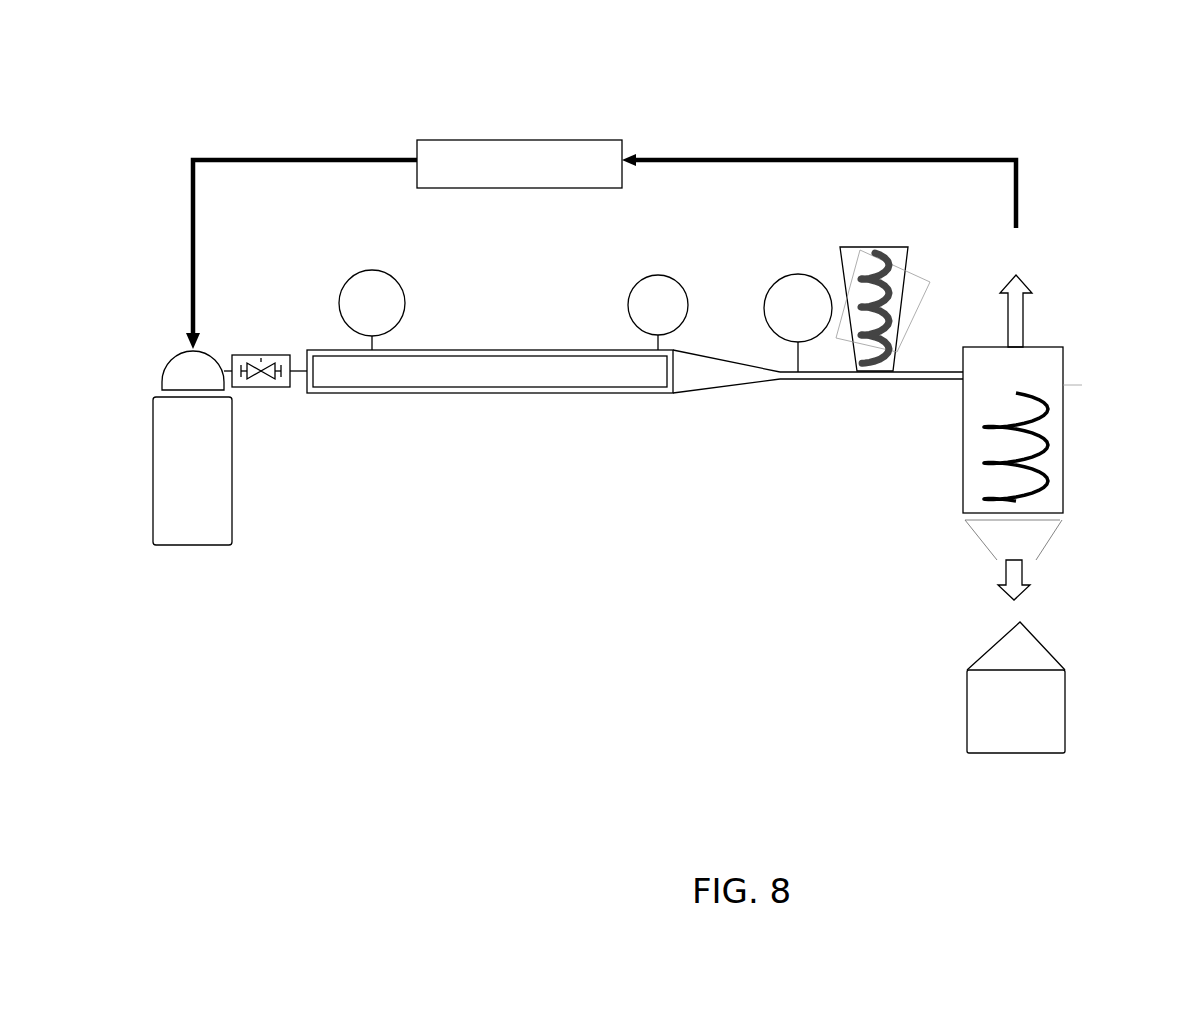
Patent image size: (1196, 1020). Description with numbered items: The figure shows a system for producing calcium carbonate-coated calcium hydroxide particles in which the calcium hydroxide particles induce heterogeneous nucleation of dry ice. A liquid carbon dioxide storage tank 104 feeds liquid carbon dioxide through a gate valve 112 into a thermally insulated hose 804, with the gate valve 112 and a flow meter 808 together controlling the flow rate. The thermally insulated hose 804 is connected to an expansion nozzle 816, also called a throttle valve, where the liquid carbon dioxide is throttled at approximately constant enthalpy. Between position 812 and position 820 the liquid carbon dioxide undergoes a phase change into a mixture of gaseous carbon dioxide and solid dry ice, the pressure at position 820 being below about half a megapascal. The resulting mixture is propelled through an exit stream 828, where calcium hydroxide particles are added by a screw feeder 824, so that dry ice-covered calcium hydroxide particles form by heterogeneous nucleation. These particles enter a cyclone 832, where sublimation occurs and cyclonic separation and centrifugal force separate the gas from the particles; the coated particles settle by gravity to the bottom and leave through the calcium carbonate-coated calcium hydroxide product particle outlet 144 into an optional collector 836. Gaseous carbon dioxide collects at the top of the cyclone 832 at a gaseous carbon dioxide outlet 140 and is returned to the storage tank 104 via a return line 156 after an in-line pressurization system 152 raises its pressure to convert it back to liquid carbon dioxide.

The liquid CO2 storage tank 104 is at (209, 548).
The gate valve 112 is at (272, 397).
The gaseous CO2 outlet 140 is at (1029, 336).
The calcium carbonate-coated calcium hydroxide product particle outlet 144 is at (1036, 590).
The in-line pressurization system 152 is at (582, 137).
The return line 156 is at (265, 155).
The thermally insulated hose 804 is at (425, 395).
The flow meter 808 is at (364, 276).
The position 812 is at (646, 286).
The expansion nozzle 816 is at (704, 394).
The position 820 is at (779, 283).
The screw feeder 824 is at (877, 246).
The exit stream 828 is at (831, 380).
The cyclone 832 is at (1066, 473).
The collector 836 is at (966, 712).